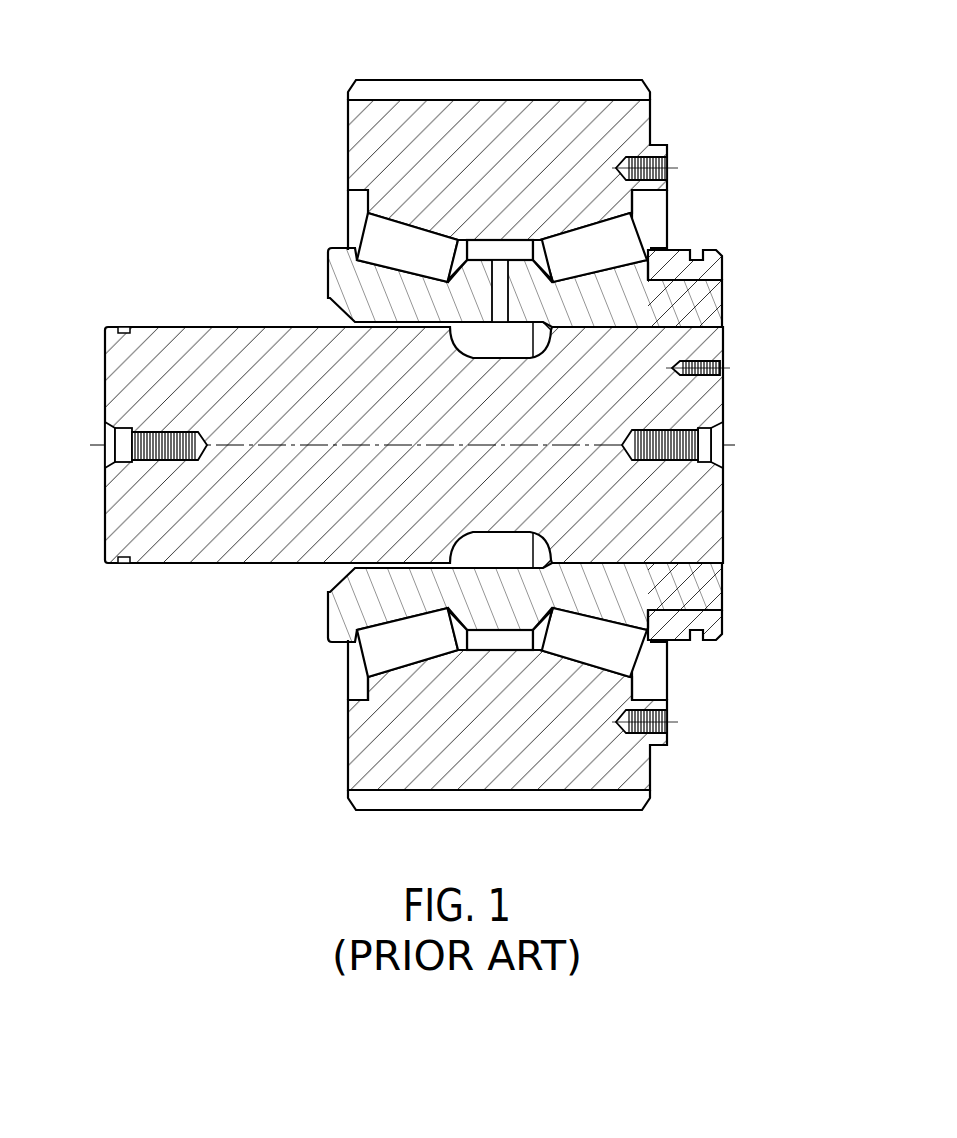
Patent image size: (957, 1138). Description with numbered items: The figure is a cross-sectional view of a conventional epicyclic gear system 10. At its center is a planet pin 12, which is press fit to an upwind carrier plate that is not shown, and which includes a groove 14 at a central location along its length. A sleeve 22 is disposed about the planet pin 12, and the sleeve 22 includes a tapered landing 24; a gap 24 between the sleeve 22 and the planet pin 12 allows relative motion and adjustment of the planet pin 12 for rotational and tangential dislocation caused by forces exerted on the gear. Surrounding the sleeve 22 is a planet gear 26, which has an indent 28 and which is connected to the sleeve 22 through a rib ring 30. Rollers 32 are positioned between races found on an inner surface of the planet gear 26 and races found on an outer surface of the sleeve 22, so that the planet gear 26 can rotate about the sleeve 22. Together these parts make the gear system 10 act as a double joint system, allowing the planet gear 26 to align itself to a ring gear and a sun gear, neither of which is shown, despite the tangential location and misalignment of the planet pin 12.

The epicyclic gear system 10 is at (276, 60).
The planet pin 12 is at (257, 358).
The groove 14 is at (482, 345).
The sleeve 22 is at (702, 587).
The tapered landing 24 is at (337, 567).
The planet gear 26 is at (547, 133).
The indent 28 is at (357, 672).
The rib ring 30 is at (702, 268).
The rollers 32 is at (627, 237).